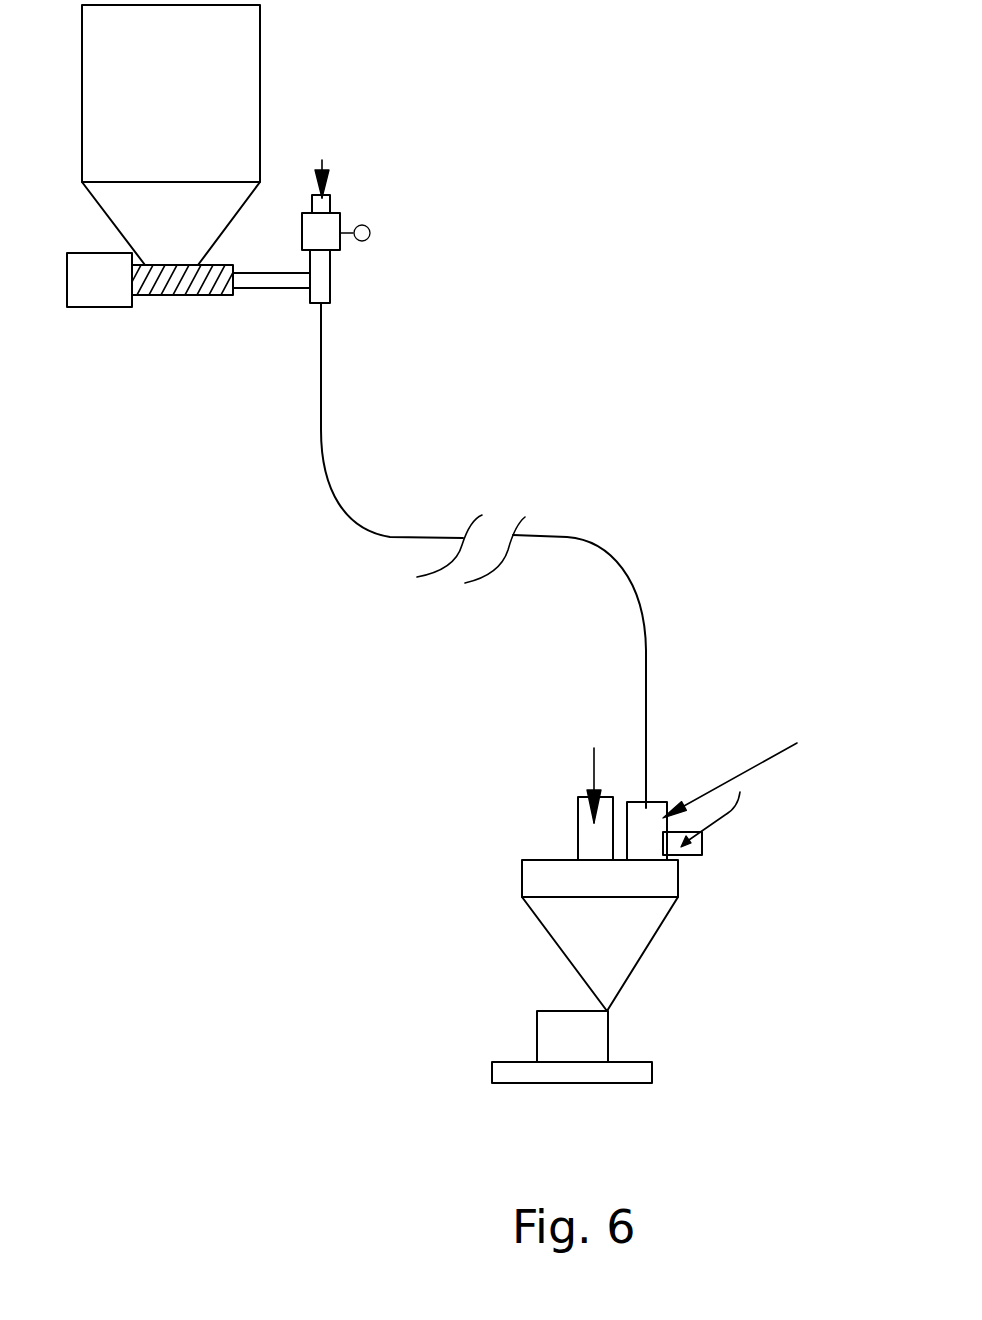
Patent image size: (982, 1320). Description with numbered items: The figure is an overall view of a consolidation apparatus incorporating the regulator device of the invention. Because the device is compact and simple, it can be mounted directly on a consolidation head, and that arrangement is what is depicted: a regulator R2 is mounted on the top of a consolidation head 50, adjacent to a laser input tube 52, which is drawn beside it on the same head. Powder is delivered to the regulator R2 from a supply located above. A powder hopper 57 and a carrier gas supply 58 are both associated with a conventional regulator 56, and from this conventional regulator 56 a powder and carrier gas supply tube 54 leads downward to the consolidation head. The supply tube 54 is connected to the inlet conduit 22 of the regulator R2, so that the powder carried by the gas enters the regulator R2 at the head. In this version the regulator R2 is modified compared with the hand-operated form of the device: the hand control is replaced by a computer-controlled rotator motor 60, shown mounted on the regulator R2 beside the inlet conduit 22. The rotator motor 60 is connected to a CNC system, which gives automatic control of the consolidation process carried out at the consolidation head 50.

The powder hopper 57 is at (223, 71).
The carrier gas supply 58 is at (326, 174).
The conventional regulator 56 is at (317, 278).
The powder and carrier gas supply tube 54 is at (597, 538).
The laser input tube 52 is at (582, 813).
The inlet conduit 22 is at (657, 818).
The regulator R2 is at (765, 763).
The computer-controlled rotator motor 60 is at (680, 850).
The consolidation head 50 is at (570, 887).